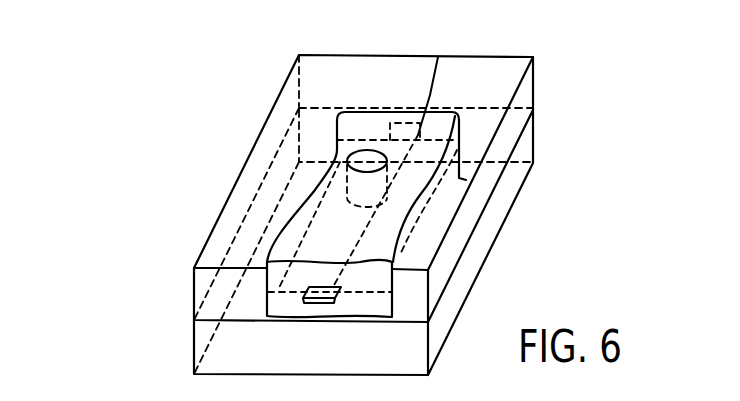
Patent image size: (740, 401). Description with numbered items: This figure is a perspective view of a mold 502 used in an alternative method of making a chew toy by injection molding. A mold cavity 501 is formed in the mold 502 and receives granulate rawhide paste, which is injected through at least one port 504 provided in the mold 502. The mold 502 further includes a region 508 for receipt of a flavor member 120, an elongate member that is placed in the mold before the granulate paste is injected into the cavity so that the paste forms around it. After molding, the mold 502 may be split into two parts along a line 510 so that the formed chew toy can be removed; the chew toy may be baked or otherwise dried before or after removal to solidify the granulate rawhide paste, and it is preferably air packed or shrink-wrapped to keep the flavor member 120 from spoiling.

The mold 502 is at (533, 105).
The line 510 is at (468, 243).
The mold cavity 501 is at (437, 184).
The port 504 is at (354, 161).
The region 508 is at (438, 57).
The flavor member 120 is at (306, 295).